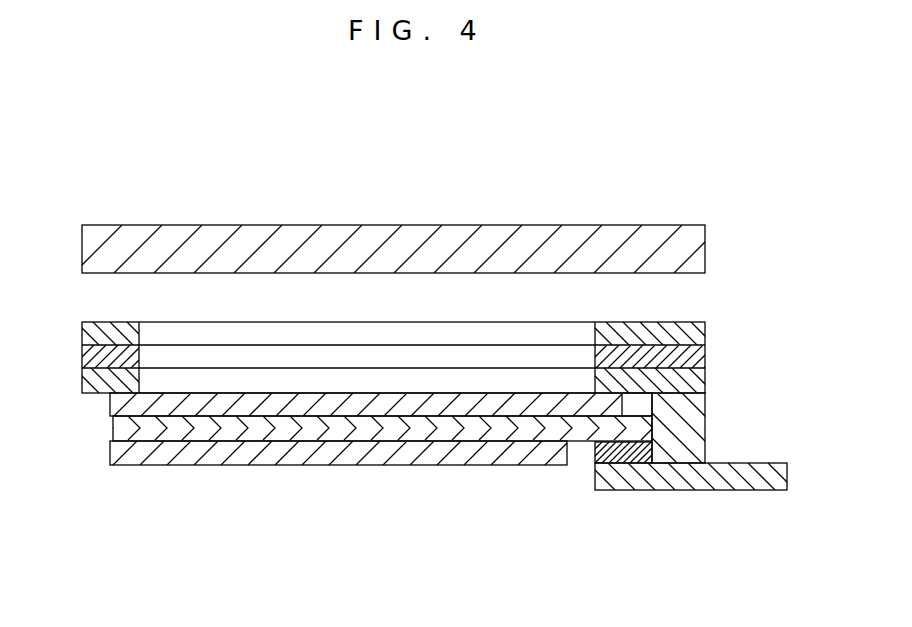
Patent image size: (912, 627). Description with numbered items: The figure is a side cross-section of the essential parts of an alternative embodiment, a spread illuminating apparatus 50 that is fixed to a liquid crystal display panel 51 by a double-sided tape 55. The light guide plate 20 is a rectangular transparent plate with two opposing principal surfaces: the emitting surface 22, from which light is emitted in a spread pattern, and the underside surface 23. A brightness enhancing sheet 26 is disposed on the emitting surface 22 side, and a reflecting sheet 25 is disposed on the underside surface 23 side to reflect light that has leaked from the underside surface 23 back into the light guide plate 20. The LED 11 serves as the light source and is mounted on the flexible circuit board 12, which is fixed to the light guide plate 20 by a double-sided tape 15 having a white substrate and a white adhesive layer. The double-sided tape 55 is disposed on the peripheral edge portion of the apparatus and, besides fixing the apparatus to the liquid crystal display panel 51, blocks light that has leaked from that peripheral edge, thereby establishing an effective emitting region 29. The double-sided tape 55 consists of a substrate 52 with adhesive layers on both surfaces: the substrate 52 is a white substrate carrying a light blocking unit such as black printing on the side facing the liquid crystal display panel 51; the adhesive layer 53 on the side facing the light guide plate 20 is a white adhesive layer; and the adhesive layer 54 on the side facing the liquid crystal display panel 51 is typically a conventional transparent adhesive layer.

The spread illuminating apparatus 50 is at (105, 138).
The liquid crystal display panel 51 is at (585, 248).
The double-sided tape 55 is at (462, 329).
The adhesive layer 54 is at (705, 335).
The substrate 52 is at (705, 355).
The adhesive layer 53 is at (432, 375).
The brightness enhancing sheet 26 is at (120, 403).
The light guide plate 20 is at (120, 430).
The reflecting sheet 25 is at (398, 455).
The underside surface 23 is at (232, 441).
The emitting surface 22 is at (283, 416).
The effective emitting region 29 is at (395, 392).
The LED 11 is at (678, 440).
The double-sided tape 15 is at (593, 452).
The flexible circuit board 12 is at (707, 480).